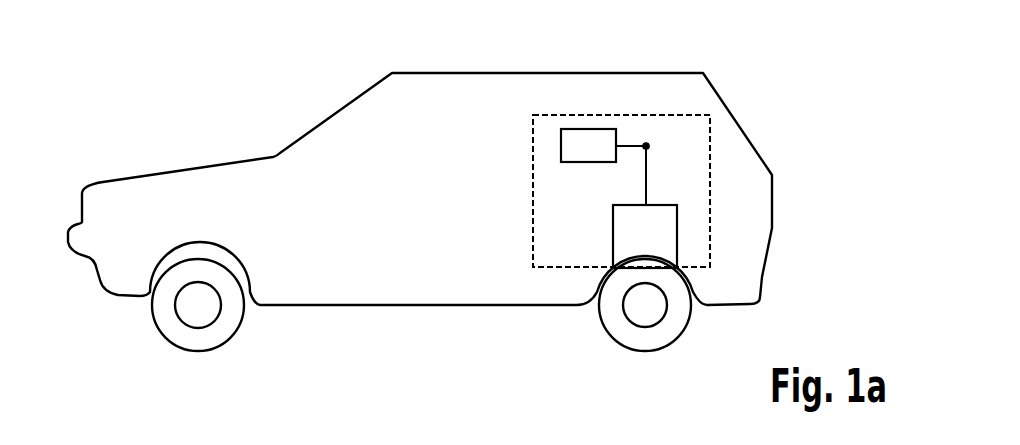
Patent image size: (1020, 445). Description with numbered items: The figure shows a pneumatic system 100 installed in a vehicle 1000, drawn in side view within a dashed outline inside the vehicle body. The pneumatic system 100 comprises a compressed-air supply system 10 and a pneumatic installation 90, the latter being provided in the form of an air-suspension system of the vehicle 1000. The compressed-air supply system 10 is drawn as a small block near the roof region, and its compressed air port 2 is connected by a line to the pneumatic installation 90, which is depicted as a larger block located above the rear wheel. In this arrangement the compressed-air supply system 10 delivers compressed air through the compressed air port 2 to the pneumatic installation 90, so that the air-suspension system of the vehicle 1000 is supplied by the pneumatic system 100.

The vehicle 1000 is at (772, 100).
The pneumatic system 100 is at (697, 128).
The compressed-air supply system 10 is at (590, 128).
The compressed air port 2 is at (646, 142).
The pneumatic installation 90 is at (677, 222).